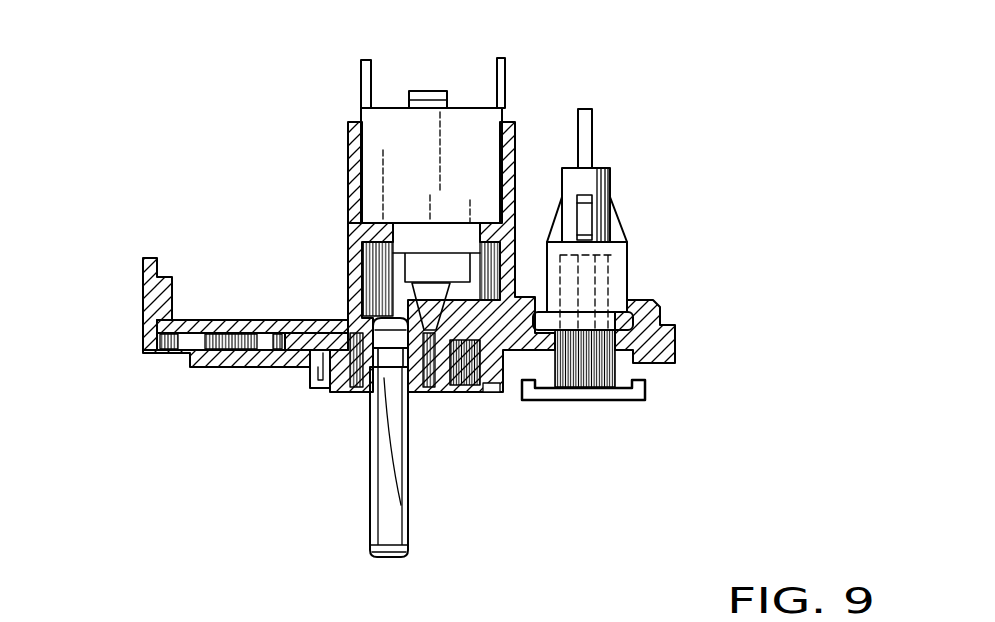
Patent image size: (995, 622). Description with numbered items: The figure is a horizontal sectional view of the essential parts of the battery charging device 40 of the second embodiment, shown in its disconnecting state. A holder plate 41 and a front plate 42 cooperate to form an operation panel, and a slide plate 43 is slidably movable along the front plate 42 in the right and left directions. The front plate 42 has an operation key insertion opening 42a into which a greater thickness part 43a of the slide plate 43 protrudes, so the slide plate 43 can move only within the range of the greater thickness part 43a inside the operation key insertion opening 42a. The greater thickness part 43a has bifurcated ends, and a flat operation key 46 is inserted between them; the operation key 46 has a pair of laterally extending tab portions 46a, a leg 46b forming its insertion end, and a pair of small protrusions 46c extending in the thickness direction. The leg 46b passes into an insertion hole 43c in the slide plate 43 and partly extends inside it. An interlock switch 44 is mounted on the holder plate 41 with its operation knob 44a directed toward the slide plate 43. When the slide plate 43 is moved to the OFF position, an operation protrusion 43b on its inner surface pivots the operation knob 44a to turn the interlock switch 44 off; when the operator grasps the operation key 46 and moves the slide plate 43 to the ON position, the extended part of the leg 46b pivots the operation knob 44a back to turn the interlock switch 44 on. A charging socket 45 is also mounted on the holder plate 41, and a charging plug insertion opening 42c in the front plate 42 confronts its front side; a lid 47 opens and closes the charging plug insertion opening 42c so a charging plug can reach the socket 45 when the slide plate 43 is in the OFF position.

The battery charging device 40 is at (501, 459).
The holder plate 41 is at (252, 319).
The front plate 42 is at (223, 368).
The operation key insertion opening 42a is at (493, 400).
The charging plug insertion opening 42c is at (613, 396).
The slide plate 43 is at (455, 393).
The greater thickness part 43a is at (350, 395).
The operation protrusion 43b is at (458, 256).
The insertion hole 43c is at (345, 309).
The interlock switch 44 is at (398, 145).
The operation knob 44a is at (362, 230).
The charging socket 45 is at (617, 259).
The operation key 46 is at (376, 466).
The tab portions 46a is at (403, 487).
The leg 46b is at (400, 287).
The small protrusions 46c is at (362, 396).
The lid 47 is at (590, 393).